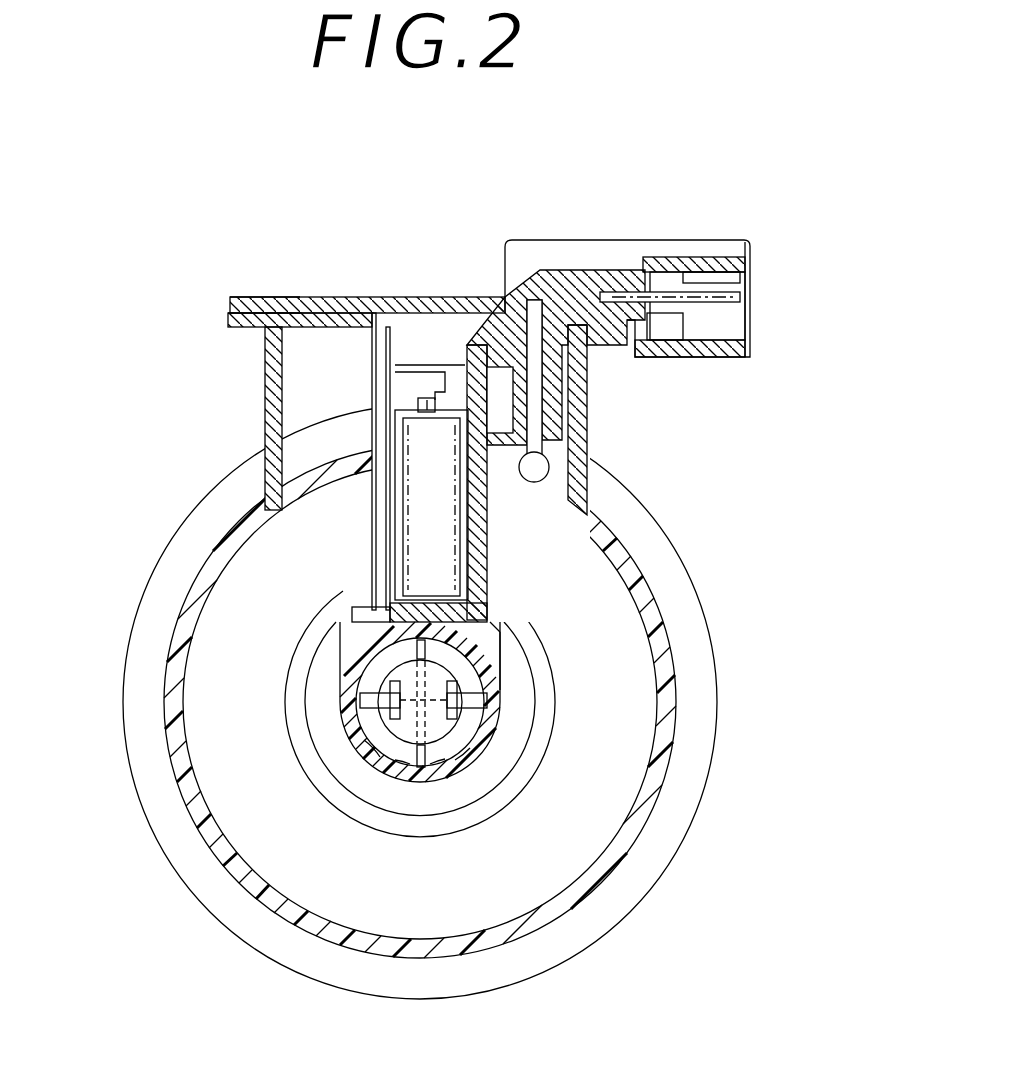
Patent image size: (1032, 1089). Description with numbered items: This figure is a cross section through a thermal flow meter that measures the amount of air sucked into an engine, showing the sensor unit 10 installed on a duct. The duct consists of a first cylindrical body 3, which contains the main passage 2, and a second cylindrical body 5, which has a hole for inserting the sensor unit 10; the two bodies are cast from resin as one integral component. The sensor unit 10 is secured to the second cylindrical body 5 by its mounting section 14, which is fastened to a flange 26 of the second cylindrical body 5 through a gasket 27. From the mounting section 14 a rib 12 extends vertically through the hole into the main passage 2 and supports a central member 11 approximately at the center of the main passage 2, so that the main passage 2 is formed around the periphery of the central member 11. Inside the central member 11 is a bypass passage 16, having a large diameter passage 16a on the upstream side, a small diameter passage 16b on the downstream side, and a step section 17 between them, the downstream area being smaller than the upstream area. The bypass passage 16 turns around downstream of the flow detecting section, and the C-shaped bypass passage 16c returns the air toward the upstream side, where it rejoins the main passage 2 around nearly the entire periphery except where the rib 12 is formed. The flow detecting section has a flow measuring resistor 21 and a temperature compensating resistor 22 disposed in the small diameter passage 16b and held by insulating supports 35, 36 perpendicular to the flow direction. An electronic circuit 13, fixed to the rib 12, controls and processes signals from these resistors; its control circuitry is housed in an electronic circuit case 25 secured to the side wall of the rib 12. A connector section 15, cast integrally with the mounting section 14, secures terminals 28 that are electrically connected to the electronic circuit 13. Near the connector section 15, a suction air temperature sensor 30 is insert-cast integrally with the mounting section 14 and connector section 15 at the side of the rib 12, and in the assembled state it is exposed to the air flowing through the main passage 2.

The main passage 2 is at (633, 757).
The first cylindrical body 3 is at (140, 647).
The second cylindrical body 5 is at (272, 393).
The sensor unit 10 is at (242, 292).
The central member 11 is at (682, 718).
The rib 12 is at (487, 523).
The electronic circuit 13 is at (405, 525).
The mounting section 14 is at (312, 296).
The connector section 15 is at (748, 243).
The bypass passage 16 is at (483, 778).
The large diameter passage 16a is at (385, 752).
The small diameter passage 16b is at (452, 805).
The bypass passage 16c is at (447, 803).
The step section 17 is at (405, 755).
The flow measuring resistor 21 is at (497, 660).
The temperature compensating resistor 22 is at (435, 703).
The electronic circuit case 25 is at (487, 585).
The flange 26 is at (233, 326).
The gasket 27 is at (233, 313).
The terminals 28 is at (745, 295).
The suction air temperature sensor 30 is at (548, 462).
The insulating support 35 is at (458, 690).
The insulating support 36 is at (463, 712).